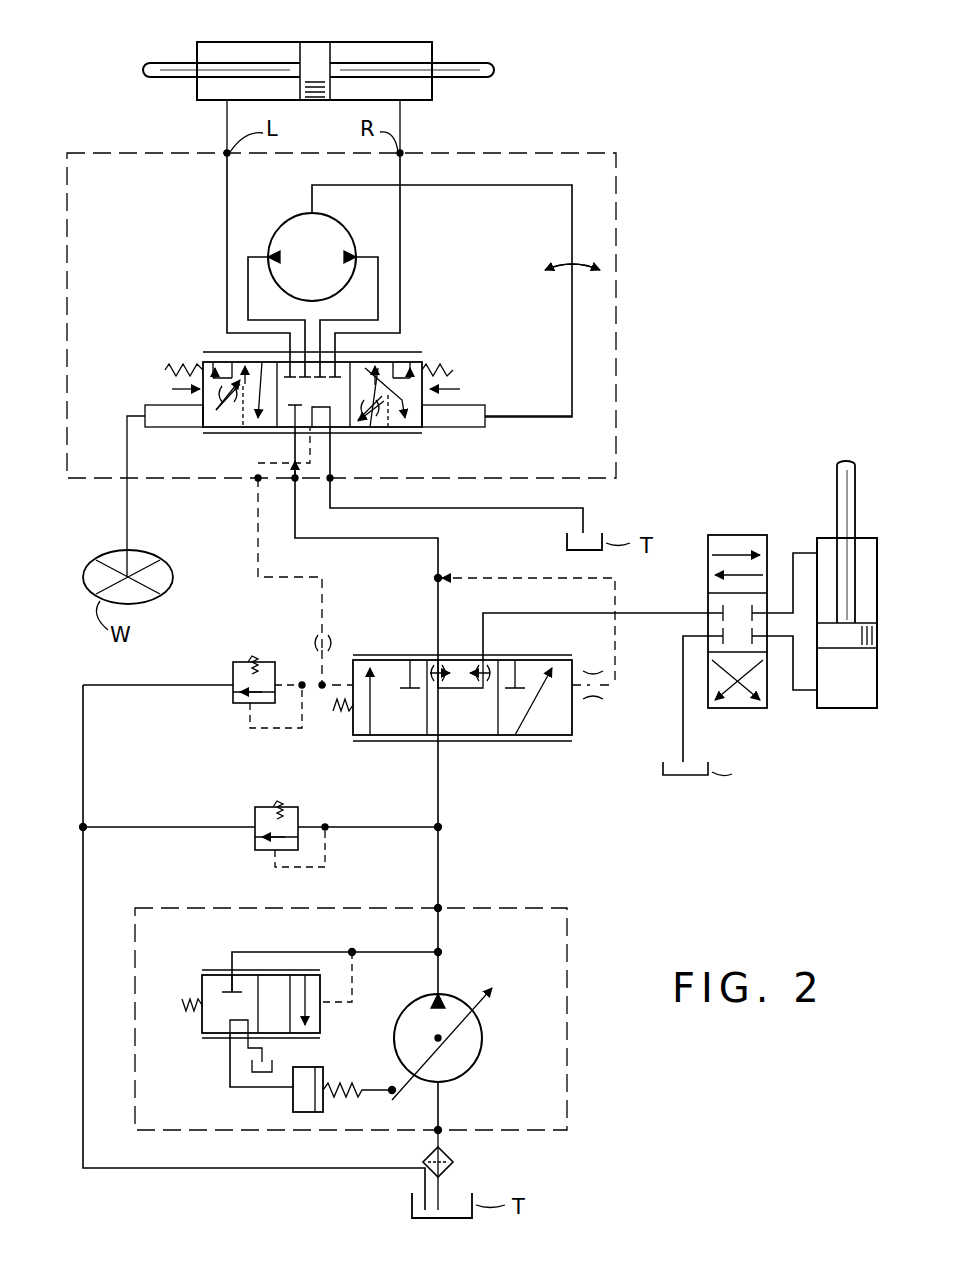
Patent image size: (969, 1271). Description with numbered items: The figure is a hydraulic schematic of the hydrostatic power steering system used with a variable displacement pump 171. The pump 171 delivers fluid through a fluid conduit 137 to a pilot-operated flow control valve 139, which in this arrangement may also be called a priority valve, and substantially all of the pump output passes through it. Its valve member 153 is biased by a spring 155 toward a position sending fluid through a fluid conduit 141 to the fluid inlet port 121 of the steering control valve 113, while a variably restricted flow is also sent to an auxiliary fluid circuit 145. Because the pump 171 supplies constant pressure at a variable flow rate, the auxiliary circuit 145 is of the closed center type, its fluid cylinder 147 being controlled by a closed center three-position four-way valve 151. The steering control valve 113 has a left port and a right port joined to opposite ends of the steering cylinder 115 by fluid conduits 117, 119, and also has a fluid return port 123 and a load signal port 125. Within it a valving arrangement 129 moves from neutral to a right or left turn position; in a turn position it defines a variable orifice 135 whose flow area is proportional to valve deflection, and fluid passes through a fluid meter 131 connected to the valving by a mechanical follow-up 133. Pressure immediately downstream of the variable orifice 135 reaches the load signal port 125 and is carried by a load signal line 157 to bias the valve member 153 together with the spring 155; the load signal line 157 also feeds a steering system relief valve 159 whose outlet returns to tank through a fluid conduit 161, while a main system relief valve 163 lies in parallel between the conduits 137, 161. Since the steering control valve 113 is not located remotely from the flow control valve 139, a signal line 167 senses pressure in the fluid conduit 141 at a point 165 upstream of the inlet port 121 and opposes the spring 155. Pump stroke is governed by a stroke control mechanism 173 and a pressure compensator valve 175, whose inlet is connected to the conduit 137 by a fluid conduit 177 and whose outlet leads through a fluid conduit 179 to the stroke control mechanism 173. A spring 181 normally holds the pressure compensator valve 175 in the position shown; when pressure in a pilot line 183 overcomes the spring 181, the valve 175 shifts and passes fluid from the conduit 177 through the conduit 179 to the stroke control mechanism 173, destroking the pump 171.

The steering control valve 113 is at (648, 251).
The steering cylinder 115 is at (325, 24).
The fluid conduit 117 is at (226, 121).
The fluid conduit 119 is at (405, 118).
The fluid inlet port 121 is at (297, 481).
The fluid return port 123 is at (333, 480).
The load signal port 125 is at (258, 481).
The valving arrangement 129 is at (432, 368).
The fluid meter 131 is at (355, 236).
The mechanical follow-up 133 is at (572, 215).
The variable orifice 135 is at (222, 400).
The fluid conduit 137 is at (443, 846).
The flow control valve 139 is at (485, 724).
The fluid conduit 141 is at (360, 540).
The auxiliary fluid circuit 145 is at (780, 626).
The fluid cylinder 147 is at (840, 710).
The three-position four-way valve 151 is at (733, 710).
The valve member 153 is at (574, 712).
The spring 155 is at (345, 715).
The load signal line 157 is at (325, 608).
The steering system relief valve 159 is at (226, 660).
The fluid conduit 161 is at (82, 782).
The main system relief valve 163 is at (242, 810).
The point 165 is at (448, 576).
The signal line 167 is at (615, 655).
The variable displacement pump 171 is at (500, 1020).
The stroke control mechanism 173 is at (288, 1096).
The pressure compensator valve 175 is at (236, 993).
The fluid conduit 177 is at (290, 952).
The fluid conduit 179 is at (230, 1060).
The spring 181 is at (188, 1022).
The pilot line 183 is at (354, 975).